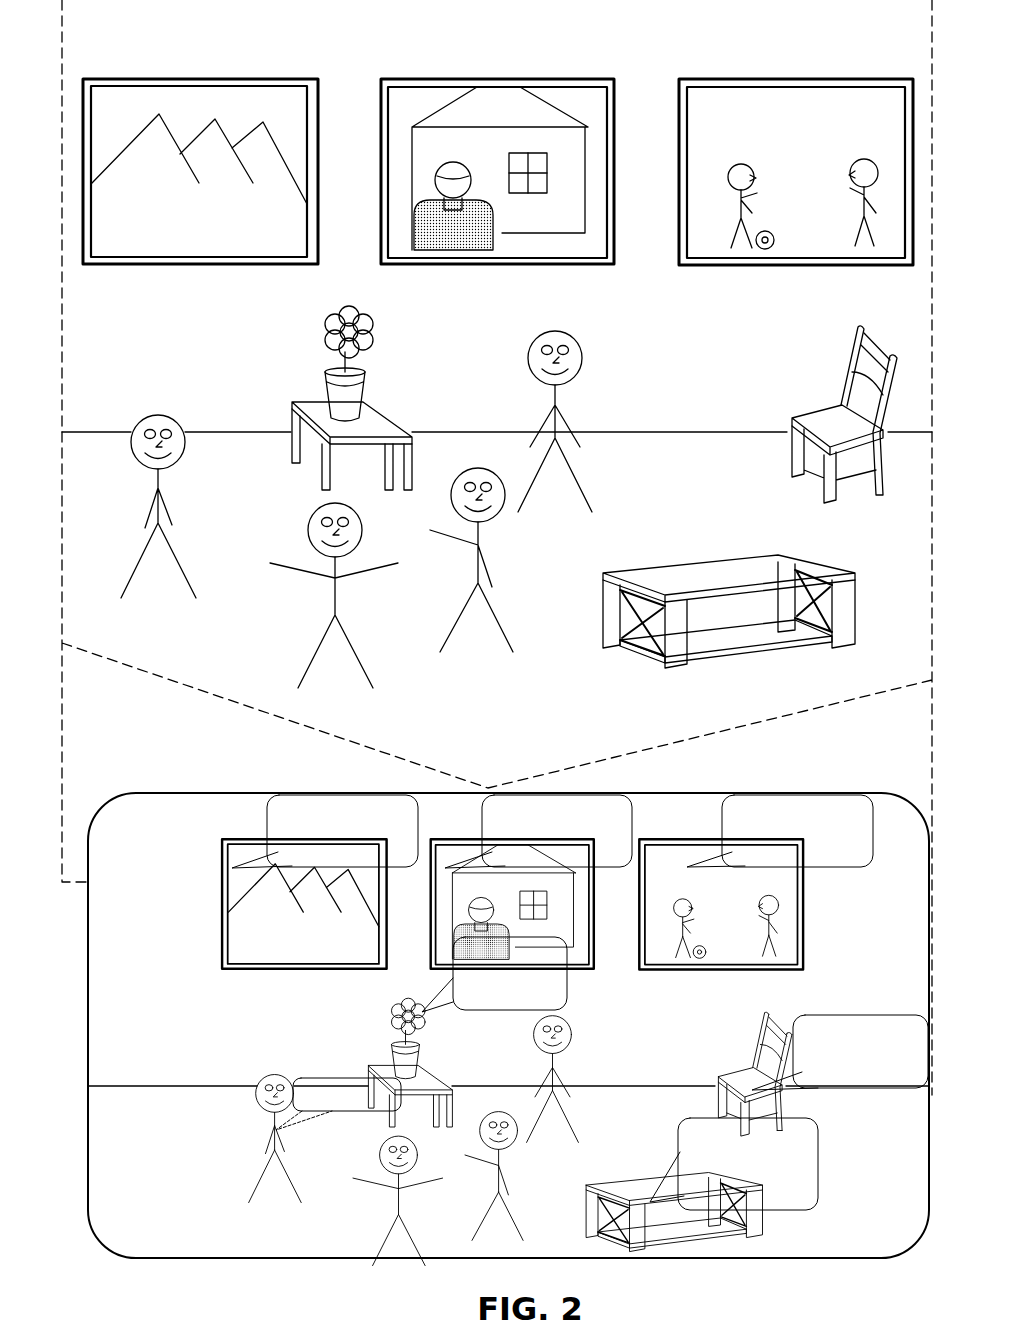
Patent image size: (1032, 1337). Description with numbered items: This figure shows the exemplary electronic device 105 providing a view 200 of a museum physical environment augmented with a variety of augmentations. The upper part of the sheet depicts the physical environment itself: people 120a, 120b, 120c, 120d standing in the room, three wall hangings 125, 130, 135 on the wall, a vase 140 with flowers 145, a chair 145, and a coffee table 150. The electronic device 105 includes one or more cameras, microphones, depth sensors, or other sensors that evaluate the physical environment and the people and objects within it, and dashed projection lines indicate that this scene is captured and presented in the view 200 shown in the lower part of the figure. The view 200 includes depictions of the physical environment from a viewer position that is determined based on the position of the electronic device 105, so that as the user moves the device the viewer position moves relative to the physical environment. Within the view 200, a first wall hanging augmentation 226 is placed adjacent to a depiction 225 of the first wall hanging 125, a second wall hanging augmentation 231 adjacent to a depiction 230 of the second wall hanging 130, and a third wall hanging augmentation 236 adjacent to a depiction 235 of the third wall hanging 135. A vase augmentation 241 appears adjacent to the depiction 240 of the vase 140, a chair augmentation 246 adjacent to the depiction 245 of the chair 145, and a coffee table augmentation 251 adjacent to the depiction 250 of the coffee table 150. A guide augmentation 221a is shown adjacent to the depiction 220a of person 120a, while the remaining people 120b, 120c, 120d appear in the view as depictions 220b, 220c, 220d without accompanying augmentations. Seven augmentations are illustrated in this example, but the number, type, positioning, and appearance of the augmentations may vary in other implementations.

The electronic device 105 is at (88, 985).
The person 120a is at (172, 555).
The person 120b is at (352, 648).
The person 120c is at (568, 472).
The person 120d is at (495, 610).
The first wall hanging 125 is at (98, 78).
The second wall hanging 130 is at (398, 76).
The third wall hanging 135 is at (718, 78).
The vase 140 is at (367, 390).
The chair 145 is at (377, 331).
The coffee table 150 is at (800, 556).
The view 200 is at (185, 844).
The depiction of person 220a is at (283, 1172).
The displayed second person 220b is at (410, 1236).
The displayed third person 220c is at (563, 1113).
The displayed fourth person 220d is at (507, 1212).
The guide augmentation 221a is at (317, 1078).
The depiction of first wall hanging 225 is at (230, 837).
The first wall hanging augmentation 226 is at (400, 868).
The depiction of second wall hanging 230 is at (440, 836).
The second wall hanging augmentation 231 is at (612, 868).
The depiction of third wall hanging 235 is at (672, 836).
The soccer photograph information tag 236 is at (840, 868).
The depiction of vase 240 is at (397, 1053).
The vase augmentation 241 is at (477, 1010).
The depiction of chair 245 is at (392, 1010).
The chair augmentation 246 is at (863, 1090).
The depiction of coffee table 250 is at (758, 1228).
The coffee table augmentation 251 is at (820, 1179).